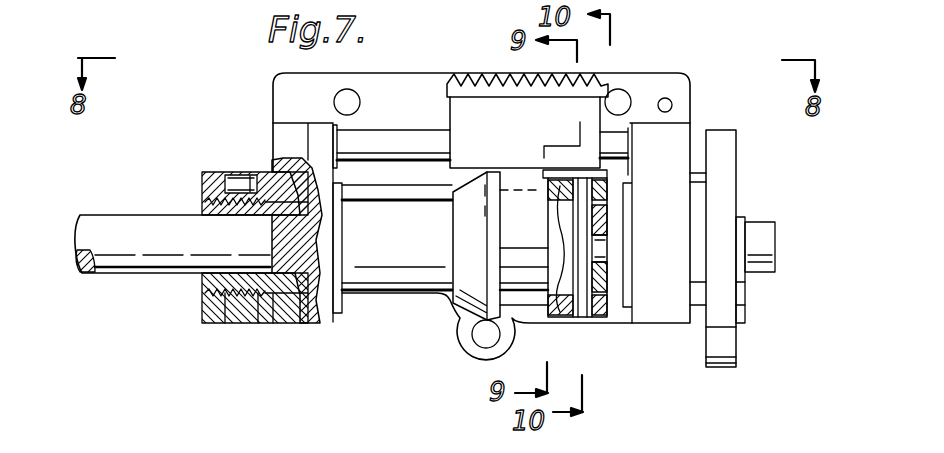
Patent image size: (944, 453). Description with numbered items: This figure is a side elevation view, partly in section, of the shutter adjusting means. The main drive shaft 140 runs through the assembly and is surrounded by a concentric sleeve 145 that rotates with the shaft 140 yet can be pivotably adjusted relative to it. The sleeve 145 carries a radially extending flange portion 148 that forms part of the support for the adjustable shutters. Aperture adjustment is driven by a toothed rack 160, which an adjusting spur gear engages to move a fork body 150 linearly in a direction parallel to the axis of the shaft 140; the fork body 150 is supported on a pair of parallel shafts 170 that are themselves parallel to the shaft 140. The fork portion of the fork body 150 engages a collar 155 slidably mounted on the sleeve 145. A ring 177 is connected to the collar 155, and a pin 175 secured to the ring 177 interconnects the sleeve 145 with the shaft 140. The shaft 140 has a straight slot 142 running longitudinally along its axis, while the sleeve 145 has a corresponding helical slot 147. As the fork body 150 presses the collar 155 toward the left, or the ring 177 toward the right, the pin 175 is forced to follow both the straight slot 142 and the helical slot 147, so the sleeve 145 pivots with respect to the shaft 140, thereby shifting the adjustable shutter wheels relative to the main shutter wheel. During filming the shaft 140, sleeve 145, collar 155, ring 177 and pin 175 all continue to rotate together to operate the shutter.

The main drive shaft 140 is at (120, 238).
The shaft slot 142 is at (565, 250).
The sleeve 145 is at (212, 285).
The sleeve slot 147 is at (548, 282).
The flange portion 148 is at (722, 146).
The fork body 150 is at (520, 230).
The collar 155 is at (473, 297).
The toothed rack 160 is at (490, 74).
The parallel shafts 170 is at (388, 146).
The pin 175 is at (583, 322).
The ring 177 is at (567, 318).